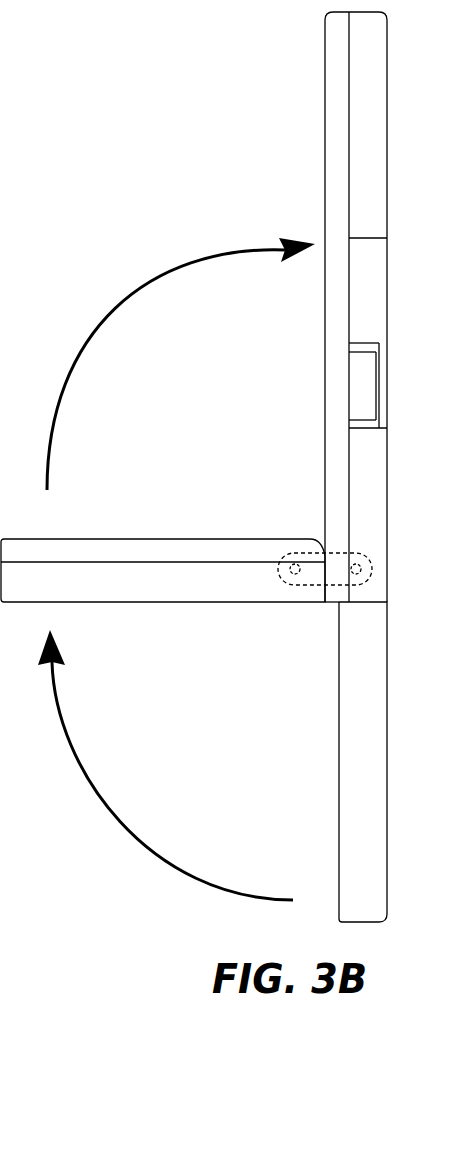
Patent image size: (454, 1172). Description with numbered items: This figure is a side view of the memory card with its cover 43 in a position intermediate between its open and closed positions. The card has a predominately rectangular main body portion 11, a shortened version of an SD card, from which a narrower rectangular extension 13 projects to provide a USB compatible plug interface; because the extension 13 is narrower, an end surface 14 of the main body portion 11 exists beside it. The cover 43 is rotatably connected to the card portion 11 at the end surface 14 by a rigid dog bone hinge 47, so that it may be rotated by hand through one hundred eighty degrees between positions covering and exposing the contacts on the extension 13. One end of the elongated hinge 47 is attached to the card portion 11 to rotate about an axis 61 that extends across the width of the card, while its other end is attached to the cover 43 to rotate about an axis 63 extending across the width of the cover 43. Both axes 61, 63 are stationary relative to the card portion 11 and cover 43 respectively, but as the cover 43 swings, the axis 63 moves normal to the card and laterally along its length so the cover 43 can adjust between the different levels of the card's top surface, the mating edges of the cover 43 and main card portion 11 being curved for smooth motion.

The main body portion 11 is at (398, 283).
The rectangular extension 13 is at (398, 737).
The end surface 14 is at (357, 575).
The cover 43 is at (66, 532).
The hinge 47 is at (347, 600).
The axis 61 is at (340, 612).
The axis 63 is at (296, 562).